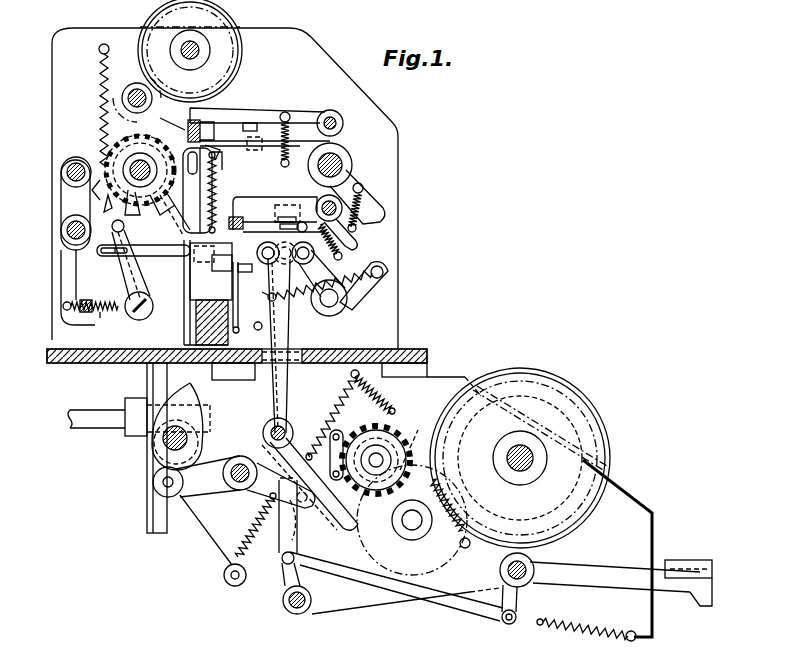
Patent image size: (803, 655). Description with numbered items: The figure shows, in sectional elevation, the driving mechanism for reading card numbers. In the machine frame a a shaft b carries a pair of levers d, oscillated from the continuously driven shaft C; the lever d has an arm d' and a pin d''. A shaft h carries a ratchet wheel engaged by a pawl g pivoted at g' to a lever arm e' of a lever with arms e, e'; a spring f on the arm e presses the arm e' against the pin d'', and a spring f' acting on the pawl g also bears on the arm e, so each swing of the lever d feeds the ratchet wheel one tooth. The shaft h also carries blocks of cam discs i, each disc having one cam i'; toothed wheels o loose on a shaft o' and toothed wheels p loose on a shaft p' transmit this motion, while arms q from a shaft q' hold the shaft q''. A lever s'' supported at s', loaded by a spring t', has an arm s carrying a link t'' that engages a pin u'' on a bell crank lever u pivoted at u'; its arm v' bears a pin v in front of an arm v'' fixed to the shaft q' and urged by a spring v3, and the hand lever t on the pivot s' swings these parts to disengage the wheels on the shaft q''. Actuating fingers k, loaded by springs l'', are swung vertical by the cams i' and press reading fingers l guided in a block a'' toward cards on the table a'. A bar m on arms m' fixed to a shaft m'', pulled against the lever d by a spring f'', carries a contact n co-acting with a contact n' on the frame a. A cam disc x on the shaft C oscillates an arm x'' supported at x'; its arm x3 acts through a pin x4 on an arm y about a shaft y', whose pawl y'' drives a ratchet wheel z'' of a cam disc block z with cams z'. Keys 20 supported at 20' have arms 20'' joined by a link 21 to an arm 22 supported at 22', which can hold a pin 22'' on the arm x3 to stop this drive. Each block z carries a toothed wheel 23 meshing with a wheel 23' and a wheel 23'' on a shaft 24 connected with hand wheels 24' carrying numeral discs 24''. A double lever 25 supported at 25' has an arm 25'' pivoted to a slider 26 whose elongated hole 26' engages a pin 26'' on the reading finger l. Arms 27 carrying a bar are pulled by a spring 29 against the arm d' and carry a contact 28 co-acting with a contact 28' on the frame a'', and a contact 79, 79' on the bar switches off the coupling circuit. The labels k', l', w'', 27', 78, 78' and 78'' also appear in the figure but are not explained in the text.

The machine frame a is at (356, 332).
The table a' is at (237, 441).
The block a'' is at (212, 316).
The shaft b is at (340, 158).
The continuously driven shaft C is at (190, 440).
The lever d is at (265, 157).
The arm d' is at (359, 197).
The pin d'' is at (225, 166).
The arm e is at (94, 196).
The lever arm e' is at (167, 174).
The spring f is at (89, 74).
The spring f' is at (118, 169).
The spring f'' is at (294, 139).
The pawl g is at (188, 132).
The pivot g' is at (172, 118).
The shaft h is at (103, 212).
The block of cam discs i is at (132, 214).
The cam i' is at (193, 184).
The actuating finger k is at (175, 218).
The lever arm k' is at (216, 150).
The reading finger l is at (202, 292).
The bracket l' is at (197, 195).
The spring l'' is at (220, 192).
The bar m is at (208, 129).
The arm m' is at (257, 104).
The shaft m'' is at (345, 123).
The contact n is at (256, 129).
The co-acting contact n' is at (262, 142).
The toothed wheel o is at (93, 104).
The shaft o' is at (137, 93).
The toothed wheel p is at (189, 51).
The shaft p' is at (200, 50).
The arm q is at (59, 230).
The shaft q' is at (57, 230).
The shaft q'' is at (57, 172).
The arm s is at (321, 273).
The pivot s' is at (333, 304).
The lever s'' is at (366, 286).
The hand lever t is at (285, 253).
The spring t' is at (324, 278).
The link t'' is at (222, 285).
The bell crank lever u is at (134, 260).
The pivot u' is at (144, 314).
The pin u'' is at (141, 263).
The pin v is at (90, 296).
The arm v' is at (102, 324).
The arm v'' is at (61, 287).
The spring v3 is at (98, 297).
The shaft w'' is at (139, 424).
The cam disc x is at (186, 426).
The support x' is at (240, 464).
The arm x'' is at (238, 521).
The arm x3 is at (281, 481).
The pin x4 is at (322, 521).
The arm y is at (331, 455).
The shaft y' is at (381, 394).
The pawl y'' is at (332, 415).
The block of cam discs z is at (382, 448).
The cam z' is at (418, 445).
The ratchet wheel z'' is at (400, 510).
The key 20 is at (688, 572).
The support 20' is at (600, 570).
The key arm 20'' is at (569, 613).
The link 21 is at (443, 612).
The arm 22 is at (267, 533).
The support 22' is at (311, 600).
The pin 22'' is at (309, 505).
The toothed wheel 23 is at (445, 493).
The toothed wheel 23' is at (412, 523).
The toothed wheel 23'' is at (540, 411).
The shaft 24 is at (520, 465).
The hand wheel 24' is at (525, 458).
The numeral disc 24'' is at (540, 458).
The double lever 25 is at (310, 394).
The support 25' is at (269, 430).
The arm 25'' is at (251, 327).
The slider 26 is at (246, 297).
The elongated hole 26' is at (203, 270).
The pin 26'' is at (224, 275).
The arm 27 is at (275, 205).
The block 27' is at (247, 219).
The contact 28 is at (284, 238).
The co-acting contact 28' is at (248, 279).
The spring 29 is at (372, 222).
The pin 78 is at (302, 208).
The pivot 78' is at (336, 222).
The spring 78'' is at (317, 241).
The contact 79 is at (281, 217).
The contact 79' is at (287, 235).